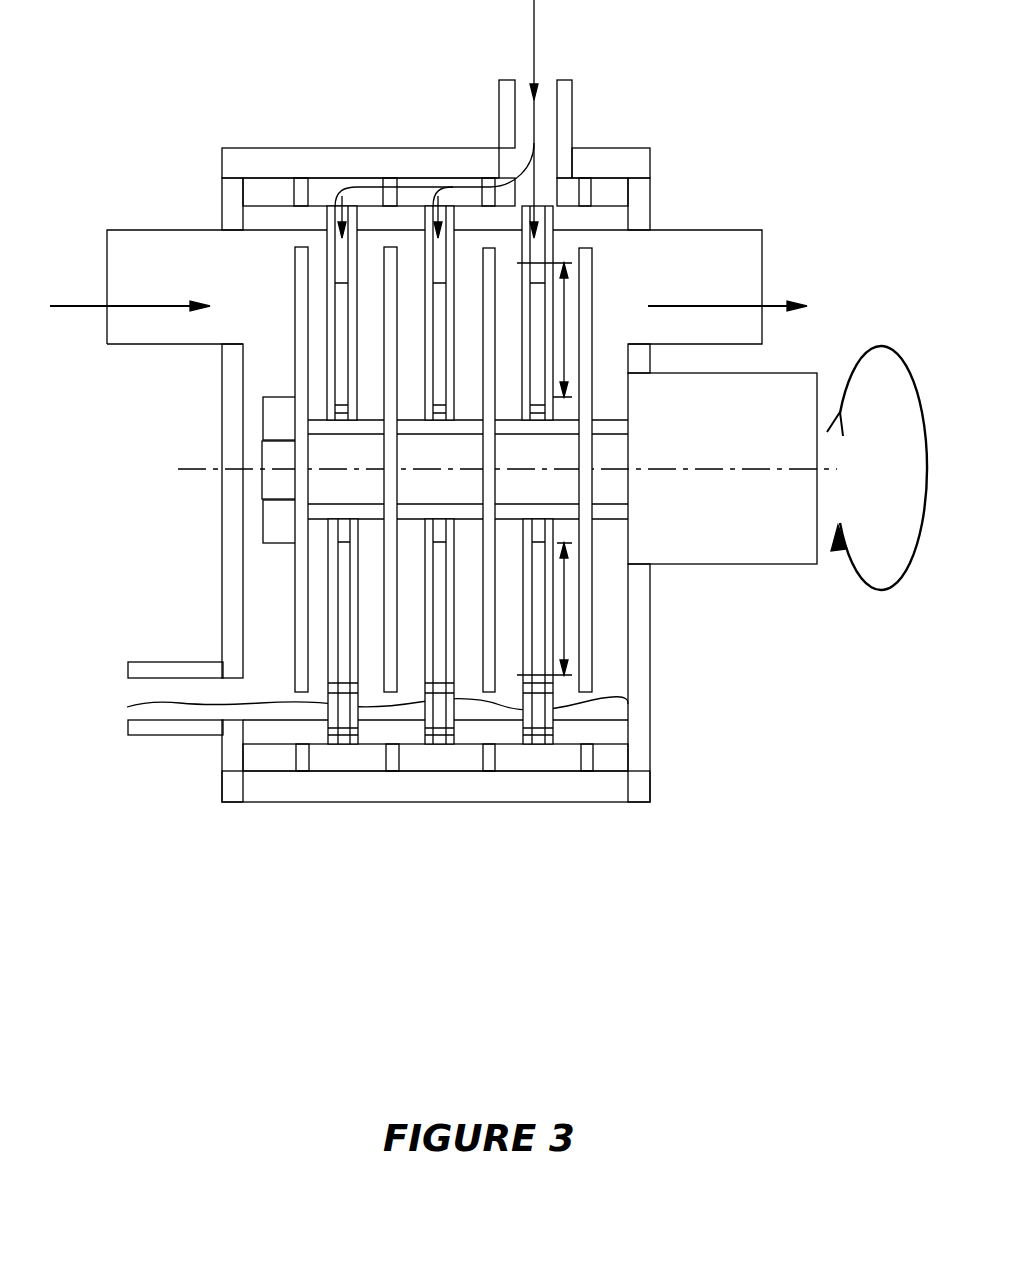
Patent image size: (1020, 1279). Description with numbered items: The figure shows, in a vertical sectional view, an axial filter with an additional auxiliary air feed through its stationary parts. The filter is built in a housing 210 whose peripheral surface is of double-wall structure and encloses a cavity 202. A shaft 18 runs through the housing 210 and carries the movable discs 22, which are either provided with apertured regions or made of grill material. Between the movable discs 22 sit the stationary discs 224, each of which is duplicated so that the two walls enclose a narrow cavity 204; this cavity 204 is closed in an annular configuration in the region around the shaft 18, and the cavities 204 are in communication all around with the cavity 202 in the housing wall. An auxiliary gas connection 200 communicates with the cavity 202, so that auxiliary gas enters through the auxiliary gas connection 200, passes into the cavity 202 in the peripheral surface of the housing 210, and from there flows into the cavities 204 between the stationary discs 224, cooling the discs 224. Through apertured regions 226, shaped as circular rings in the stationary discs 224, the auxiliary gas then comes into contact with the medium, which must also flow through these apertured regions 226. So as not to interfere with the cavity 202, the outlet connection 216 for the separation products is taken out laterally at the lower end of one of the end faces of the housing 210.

The shaft 18 is at (325, 455).
The movable discs 22 is at (297, 648).
The auxiliary gas connection 200 is at (536, 142).
The cavity 202 is at (325, 188).
The cavity 204 is at (340, 283).
The housing 210 is at (382, 802).
The outlet connection 216 is at (135, 704).
The stationary discs 224 is at (328, 593).
The apertured regions 226 is at (564, 623).